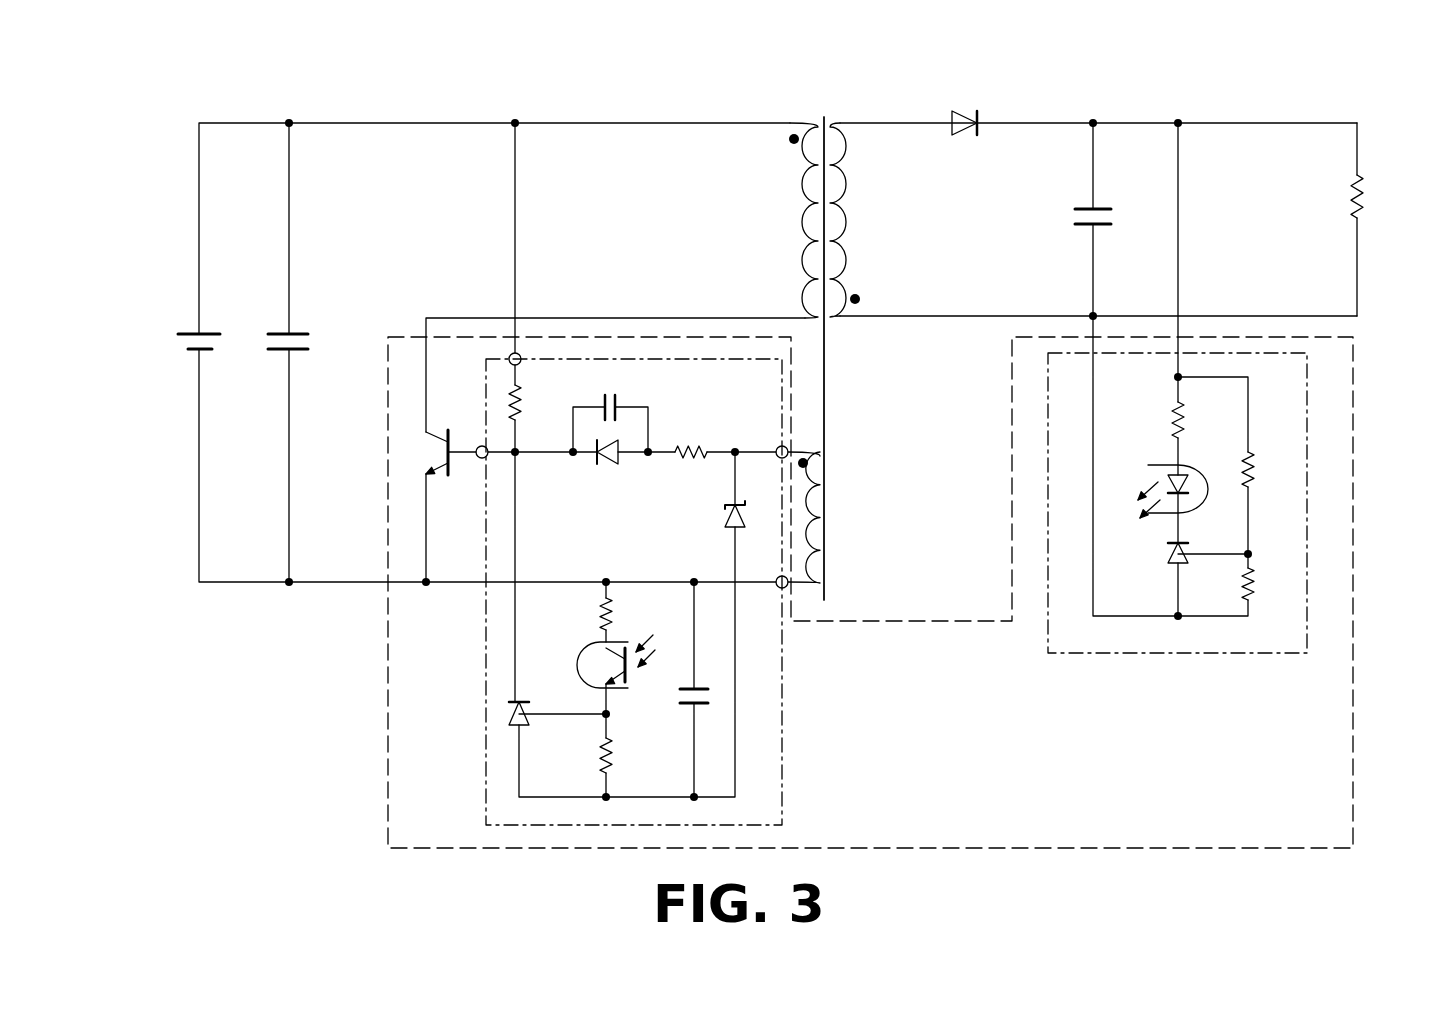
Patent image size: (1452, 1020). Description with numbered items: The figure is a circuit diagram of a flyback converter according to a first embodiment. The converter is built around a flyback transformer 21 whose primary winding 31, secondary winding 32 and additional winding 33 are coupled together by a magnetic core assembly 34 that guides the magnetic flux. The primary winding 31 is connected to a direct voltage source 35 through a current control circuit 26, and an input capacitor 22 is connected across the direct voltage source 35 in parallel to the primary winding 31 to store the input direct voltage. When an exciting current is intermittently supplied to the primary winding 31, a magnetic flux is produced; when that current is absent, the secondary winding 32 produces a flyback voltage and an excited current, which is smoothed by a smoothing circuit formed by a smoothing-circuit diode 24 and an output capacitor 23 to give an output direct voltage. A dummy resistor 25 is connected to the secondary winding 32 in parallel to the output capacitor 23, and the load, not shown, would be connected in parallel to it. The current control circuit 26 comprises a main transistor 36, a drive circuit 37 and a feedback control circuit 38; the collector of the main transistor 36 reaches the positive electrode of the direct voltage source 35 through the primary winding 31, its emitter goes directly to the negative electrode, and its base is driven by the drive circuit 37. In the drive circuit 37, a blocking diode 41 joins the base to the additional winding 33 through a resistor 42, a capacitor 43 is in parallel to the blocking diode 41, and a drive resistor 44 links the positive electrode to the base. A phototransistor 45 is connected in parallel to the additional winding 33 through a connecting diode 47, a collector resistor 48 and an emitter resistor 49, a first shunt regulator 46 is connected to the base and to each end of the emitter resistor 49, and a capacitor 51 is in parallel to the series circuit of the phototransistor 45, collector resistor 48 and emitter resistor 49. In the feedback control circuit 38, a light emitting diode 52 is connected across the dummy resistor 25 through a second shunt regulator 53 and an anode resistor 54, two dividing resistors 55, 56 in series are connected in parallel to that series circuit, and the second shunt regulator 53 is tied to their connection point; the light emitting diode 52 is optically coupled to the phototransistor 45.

The flyback transformer 21 is at (820, 107).
The input capacitor 22 is at (300, 333).
The output capacitor 23 is at (1098, 207).
The smoothing-circuit diode 24 is at (958, 100).
The dummy resistor 25 is at (1362, 200).
The current control circuit 26 is at (388, 707).
The primary winding 31 is at (800, 213).
The secondary winding 32 is at (848, 222).
The additional winding 33 is at (820, 490).
The magnetic core assembly 34 is at (826, 390).
The direct voltage source 35 is at (178, 332).
The main transistor 36 is at (430, 452).
The drive circuit 37 is at (785, 800).
The feedback control circuit 38 is at (1202, 656).
The blocking diode 41 is at (610, 465).
The resistor 42 is at (700, 442).
The capacitor 43 is at (620, 400).
The drive resistor 44 is at (522, 395).
The phototransistor 45 is at (620, 640).
The first shunt regulator 46 is at (528, 730).
The connecting diode 47 is at (724, 515).
The collector resistor 48 is at (600, 612).
The emitter resistor 49 is at (640, 767).
The capacitor 51 is at (690, 712).
The light emitting diode 52 is at (1186, 463).
The second shunt regulator 53 is at (1172, 560).
The anode resistor 54 is at (1176, 418).
The dividing resistor 55 is at (1250, 470).
The dividing resistor 56 is at (1250, 590).